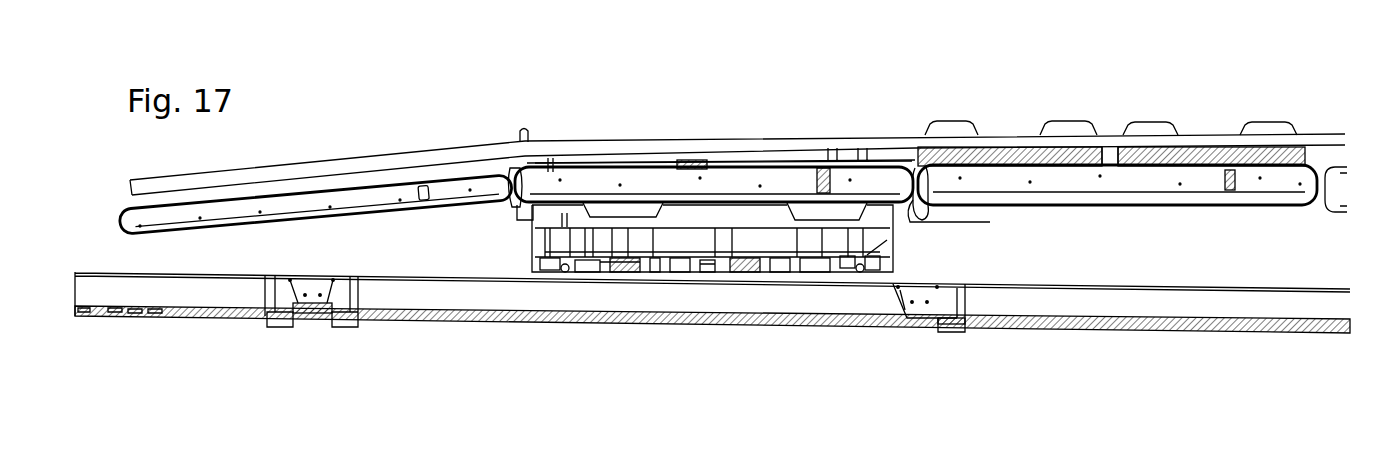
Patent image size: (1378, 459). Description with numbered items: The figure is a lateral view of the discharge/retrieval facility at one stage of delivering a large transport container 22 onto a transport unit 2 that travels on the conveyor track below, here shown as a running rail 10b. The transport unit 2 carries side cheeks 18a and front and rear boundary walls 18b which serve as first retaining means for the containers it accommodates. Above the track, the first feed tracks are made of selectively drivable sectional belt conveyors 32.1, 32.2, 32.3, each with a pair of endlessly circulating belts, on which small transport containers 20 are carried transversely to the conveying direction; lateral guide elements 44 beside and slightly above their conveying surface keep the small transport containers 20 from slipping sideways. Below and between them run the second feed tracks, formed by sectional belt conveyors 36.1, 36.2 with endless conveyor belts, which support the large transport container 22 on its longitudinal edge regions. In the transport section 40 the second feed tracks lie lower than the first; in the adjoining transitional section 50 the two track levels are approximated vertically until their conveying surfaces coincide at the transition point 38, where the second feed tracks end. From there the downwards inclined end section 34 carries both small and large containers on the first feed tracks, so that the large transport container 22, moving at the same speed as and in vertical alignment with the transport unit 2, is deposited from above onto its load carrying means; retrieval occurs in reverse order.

The transport unit 2 is at (720, 283).
The running rail 10b is at (1015, 300).
The side cheek 18a is at (563, 217).
The boundary wall 18b is at (518, 207).
The small transport container 20 is at (950, 122).
The large transport container 22 is at (645, 165).
The sectional belt conveyor 32.1 is at (1318, 150).
The sectional belt conveyor 32.2 is at (620, 168).
The sectional belt conveyor 32.3 is at (293, 190).
The end section 34 is at (365, 128).
The sectional belt conveyor 36.1 is at (1147, 208).
The sectional belt conveyor 36.2 is at (922, 214).
The transition point 38 is at (514, 120).
The transport section 40 is at (1157, 98).
The lateral guide element 44 is at (452, 157).
The transitional section 50 is at (722, 108).